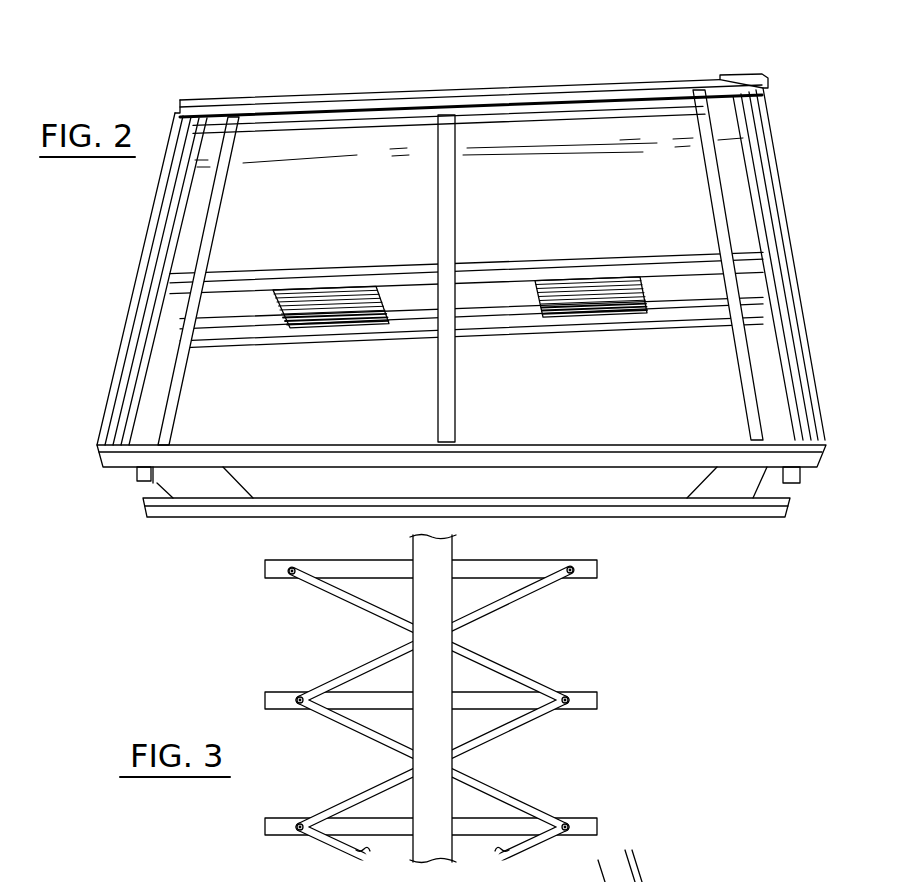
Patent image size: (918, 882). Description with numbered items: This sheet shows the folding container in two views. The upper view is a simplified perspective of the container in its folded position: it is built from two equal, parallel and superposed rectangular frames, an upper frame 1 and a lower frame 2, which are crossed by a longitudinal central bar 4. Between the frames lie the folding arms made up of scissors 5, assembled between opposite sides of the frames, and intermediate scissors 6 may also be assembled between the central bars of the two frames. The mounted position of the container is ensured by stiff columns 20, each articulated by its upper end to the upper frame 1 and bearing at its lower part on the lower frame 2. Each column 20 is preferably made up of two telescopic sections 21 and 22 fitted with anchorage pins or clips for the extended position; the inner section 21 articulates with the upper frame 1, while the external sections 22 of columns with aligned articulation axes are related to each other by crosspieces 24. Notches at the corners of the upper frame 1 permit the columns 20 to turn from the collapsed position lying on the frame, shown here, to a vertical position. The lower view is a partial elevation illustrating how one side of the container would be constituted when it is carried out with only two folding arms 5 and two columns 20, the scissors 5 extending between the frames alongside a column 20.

In FIG. 2, the upper frame 1 is at (122, 460).
In FIG. 2, the lower frame 2 is at (183, 508).
In FIG. 2, the longitudinal central bar 4 is at (503, 318).
In FIG. 3, the folding arm scissors 5 is at (517, 725).
In FIG. 2, the intermediate scissors 6 is at (340, 315).
In FIG. 2, the stiff column 20 is at (281, 78).
In FIG. 3, the stiff column 20 is at (432, 663).
In FIG. 2, the telescopic section 21 is at (742, 72).
In FIG. 2, the external telescopic section 22 is at (583, 90).
In FIG. 3, the external telescopic section 22 is at (663, 881).
In FIG. 2, the crosspiece 24 is at (178, 190).